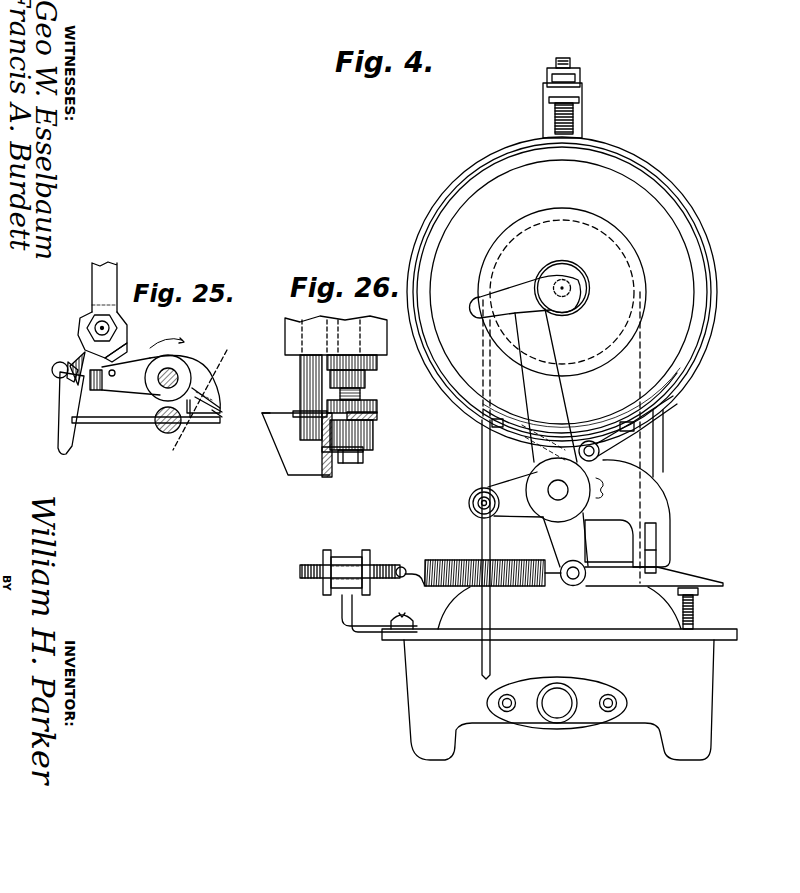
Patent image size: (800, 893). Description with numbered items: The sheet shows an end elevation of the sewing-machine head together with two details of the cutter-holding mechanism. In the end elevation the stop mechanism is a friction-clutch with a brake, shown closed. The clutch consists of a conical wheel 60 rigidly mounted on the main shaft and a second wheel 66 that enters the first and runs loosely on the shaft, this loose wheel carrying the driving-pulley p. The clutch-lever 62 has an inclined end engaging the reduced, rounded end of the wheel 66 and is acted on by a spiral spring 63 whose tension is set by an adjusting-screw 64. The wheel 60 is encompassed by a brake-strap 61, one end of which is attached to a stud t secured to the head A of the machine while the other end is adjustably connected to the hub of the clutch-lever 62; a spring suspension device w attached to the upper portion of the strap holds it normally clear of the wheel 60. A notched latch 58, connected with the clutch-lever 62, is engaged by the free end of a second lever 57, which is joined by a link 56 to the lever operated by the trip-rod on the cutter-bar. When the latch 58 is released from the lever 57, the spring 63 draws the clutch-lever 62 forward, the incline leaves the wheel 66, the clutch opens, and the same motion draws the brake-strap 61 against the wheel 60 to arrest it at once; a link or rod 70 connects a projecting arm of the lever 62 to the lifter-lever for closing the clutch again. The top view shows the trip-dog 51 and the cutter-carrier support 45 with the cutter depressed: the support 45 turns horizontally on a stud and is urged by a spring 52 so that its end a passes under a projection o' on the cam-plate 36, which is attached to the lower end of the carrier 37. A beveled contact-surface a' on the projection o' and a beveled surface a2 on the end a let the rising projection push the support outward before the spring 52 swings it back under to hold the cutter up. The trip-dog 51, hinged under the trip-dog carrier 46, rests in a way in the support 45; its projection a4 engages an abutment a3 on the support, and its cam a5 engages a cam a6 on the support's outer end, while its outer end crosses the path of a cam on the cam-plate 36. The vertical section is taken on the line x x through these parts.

In FIG. 4, the spring suspension device w is at (573, 113).
In FIG. 4, the conical wheel 60 is at (663, 192).
In FIG. 4, the brake-strap 61 is at (722, 281).
In FIG. 4, the second wheel 66 is at (579, 292).
In FIG. 4, the driving-pulley p is at (573, 288).
In FIG. 4, the clutch-lever 62 is at (525, 368).
In FIG. 4, the head A is at (495, 452).
In FIG. 4, the stud t is at (599, 452).
In FIG. 4, the link 56 is at (663, 453).
In FIG. 4, the second lever 57 is at (657, 562).
In FIG. 4, the notched latch 58 is at (642, 574).
In FIG. 4, the spiral spring 63 is at (458, 543).
In FIG. 4, the adjusting-screw 64 is at (336, 564).
In FIG. 4, the link or rod 70 is at (483, 655).
In FIG. 25, the trip-dog carrier 46 is at (92, 288).
In FIG. 25, the trip-dog 51 is at (65, 423).
In FIG. 25, the cam a5 is at (52, 373).
In FIG. 25, the cam a6 is at (70, 366).
In FIG. 25, the abutment a3 is at (108, 370).
In FIG. 25, the projection a4 is at (94, 384).
In FIG. 25, the cutter-carrier support 45 is at (132, 387).
In FIG. 25, the section line x is at (203, 397).
In FIG. 25, the end a is at (217, 389).
In FIG. 26, the end a is at (364, 407).
In FIG. 25, the beveled contact-surface a' is at (225, 398).
In FIG. 26, the beveled contact-surface a' is at (374, 452).
In FIG. 25, the projection o' is at (230, 416).
In FIG. 26, the projection o' is at (342, 471).
In FIG. 25, the cam-plate 36 is at (133, 418).
In FIG. 26, the cam-plate 36 is at (295, 455).
In FIG. 25, the carrier 37 is at (178, 430).
In FIG. 26, the carrier 37 is at (303, 395).
In FIG. 26, the spring 52 is at (360, 392).
In FIG. 26, the beveled surface a2 is at (347, 425).